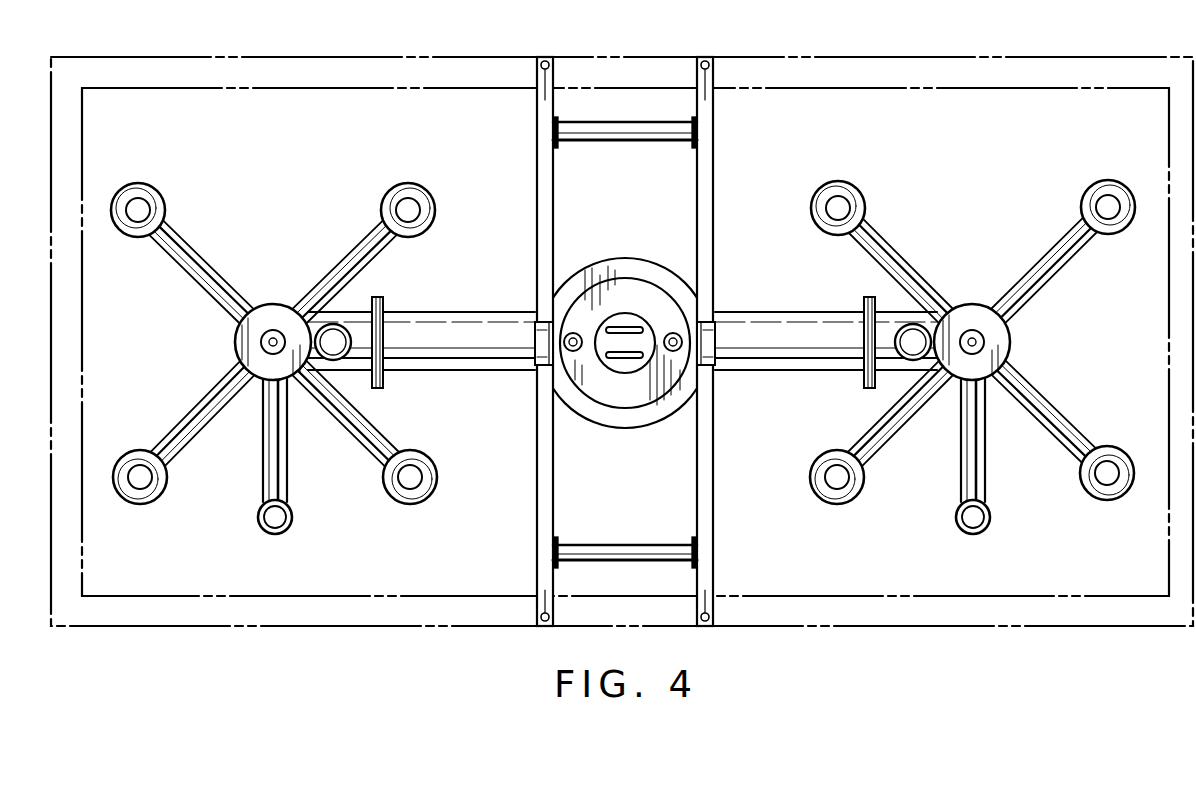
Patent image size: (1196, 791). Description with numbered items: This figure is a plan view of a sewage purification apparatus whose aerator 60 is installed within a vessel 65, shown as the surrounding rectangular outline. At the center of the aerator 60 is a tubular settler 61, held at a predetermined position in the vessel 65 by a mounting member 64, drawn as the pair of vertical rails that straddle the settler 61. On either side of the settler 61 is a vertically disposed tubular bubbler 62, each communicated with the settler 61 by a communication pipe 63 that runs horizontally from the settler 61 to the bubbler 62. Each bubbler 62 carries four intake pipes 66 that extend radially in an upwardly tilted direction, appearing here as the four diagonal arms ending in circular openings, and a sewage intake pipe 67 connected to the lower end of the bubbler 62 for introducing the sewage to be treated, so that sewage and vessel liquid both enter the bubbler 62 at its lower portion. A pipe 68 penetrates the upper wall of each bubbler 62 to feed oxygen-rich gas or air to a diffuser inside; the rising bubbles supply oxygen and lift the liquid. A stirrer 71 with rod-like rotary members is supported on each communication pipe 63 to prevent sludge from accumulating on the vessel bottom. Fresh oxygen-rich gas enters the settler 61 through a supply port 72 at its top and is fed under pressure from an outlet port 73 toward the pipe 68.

The aerator 60 is at (800, 312).
The tubular settler 61 is at (640, 405).
The bubbler 62 is at (240, 342).
The communication pipe 63 is at (437, 322).
The mounting member 64 is at (537, 460).
The vessel 65 is at (1005, 65).
The intake pipe 66 is at (165, 210).
The sewage intake pipe 67 is at (263, 480).
The pipe 68 is at (274, 330).
The stirrer 71 is at (345, 326).
The supply port 72 is at (673, 332).
The outlet port 73 is at (573, 332).